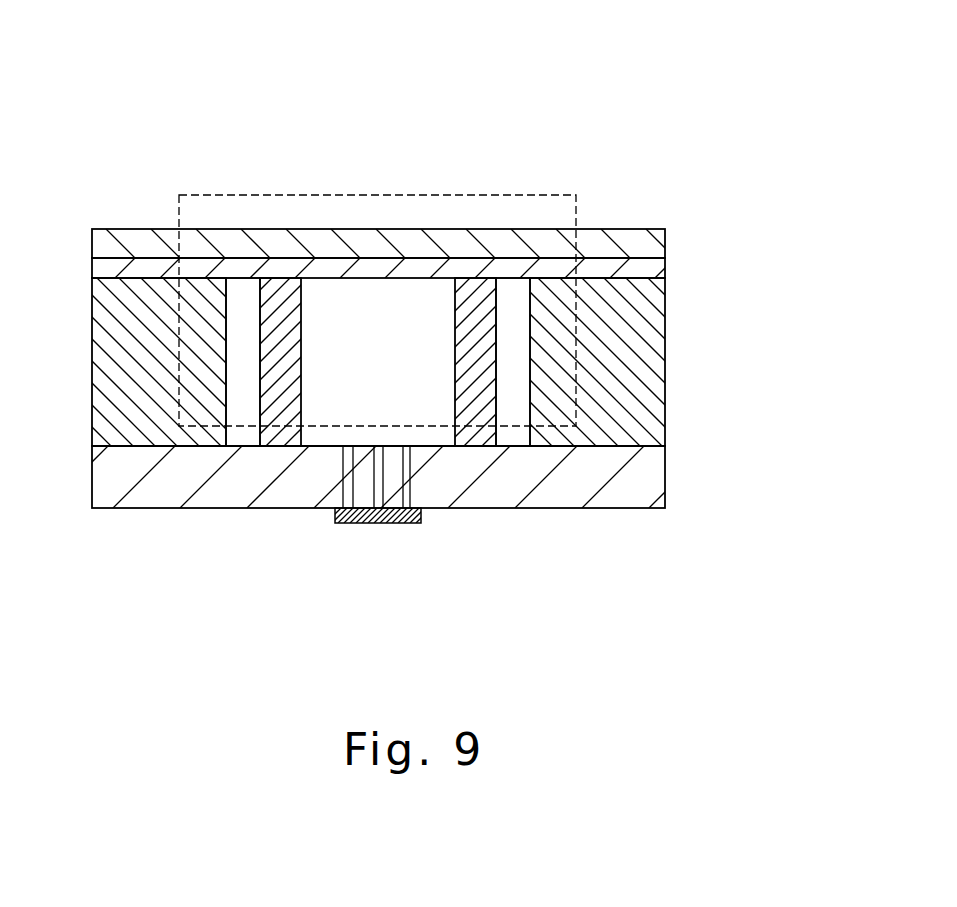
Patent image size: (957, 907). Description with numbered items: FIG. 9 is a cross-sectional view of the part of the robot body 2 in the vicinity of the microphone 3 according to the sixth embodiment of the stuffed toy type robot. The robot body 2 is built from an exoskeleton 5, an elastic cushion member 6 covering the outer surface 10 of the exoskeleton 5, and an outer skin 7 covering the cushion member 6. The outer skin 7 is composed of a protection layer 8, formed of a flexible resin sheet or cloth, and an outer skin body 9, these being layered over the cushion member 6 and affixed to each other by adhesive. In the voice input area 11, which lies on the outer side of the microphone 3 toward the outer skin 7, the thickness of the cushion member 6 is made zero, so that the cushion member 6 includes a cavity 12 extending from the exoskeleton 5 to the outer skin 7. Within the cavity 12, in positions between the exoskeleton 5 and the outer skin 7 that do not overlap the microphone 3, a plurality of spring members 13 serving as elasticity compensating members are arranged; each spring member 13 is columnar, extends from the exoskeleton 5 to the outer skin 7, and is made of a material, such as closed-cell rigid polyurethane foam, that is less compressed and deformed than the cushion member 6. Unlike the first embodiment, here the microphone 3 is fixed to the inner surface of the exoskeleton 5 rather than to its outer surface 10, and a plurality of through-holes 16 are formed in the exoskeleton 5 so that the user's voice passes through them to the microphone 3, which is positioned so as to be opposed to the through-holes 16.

The robot body 2 is at (701, 131).
The microphone 3 is at (378, 523).
The exoskeleton 5 is at (648, 478).
The cushion member 6 is at (645, 370).
The outer skin 7 is at (737, 222).
The protection layer 8 is at (655, 268).
The outer skin body 9 is at (650, 244).
The outer surface 10 is at (100, 441).
The voice input area 11 is at (388, 195).
The cavity 12 is at (230, 307).
The spring member 13 is at (286, 440).
The through-hole 16 is at (346, 446).